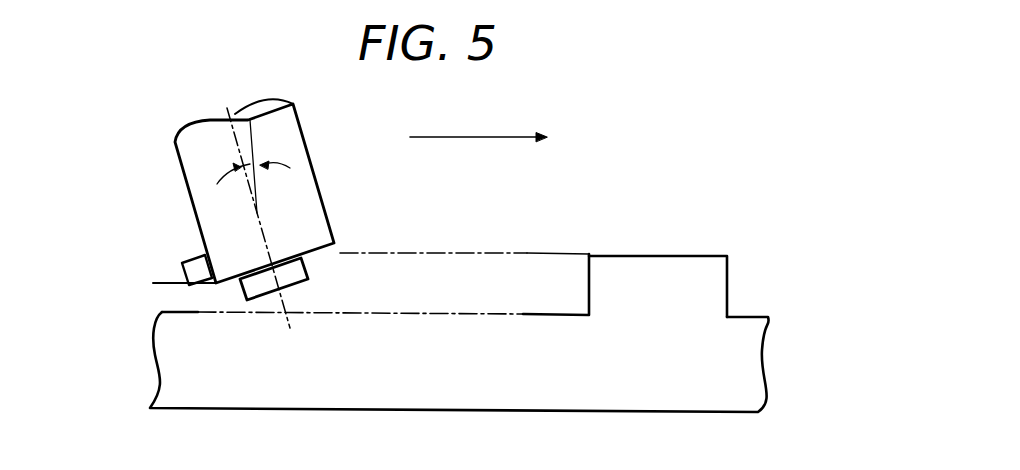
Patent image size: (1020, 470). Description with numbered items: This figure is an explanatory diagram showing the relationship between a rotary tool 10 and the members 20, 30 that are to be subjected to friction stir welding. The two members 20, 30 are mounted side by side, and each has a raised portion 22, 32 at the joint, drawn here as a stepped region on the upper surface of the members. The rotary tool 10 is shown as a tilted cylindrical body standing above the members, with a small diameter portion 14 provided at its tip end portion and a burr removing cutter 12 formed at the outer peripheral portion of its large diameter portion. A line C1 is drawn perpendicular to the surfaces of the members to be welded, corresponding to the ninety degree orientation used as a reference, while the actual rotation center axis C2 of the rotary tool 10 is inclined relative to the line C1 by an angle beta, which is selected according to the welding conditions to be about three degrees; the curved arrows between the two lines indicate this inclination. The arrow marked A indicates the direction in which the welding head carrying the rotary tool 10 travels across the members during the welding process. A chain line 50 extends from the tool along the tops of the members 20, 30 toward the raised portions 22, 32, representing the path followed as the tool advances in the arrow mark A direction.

The rotary tool 10 is at (193, 158).
The burr removing cutter 12 is at (188, 263).
The small diameter portion 14 is at (243, 283).
The member to be subjected to friction stir welding 20 is at (459, 305).
The member to be subjected to friction stir welding 30 is at (543, 317).
The raised portion 22 is at (658, 258).
The raised portion 32 is at (645, 268).
The scanning trajectory line 50 is at (452, 268).
The line perpendicular to the surfaces of the members C1 is at (254, 147).
The rotation center axis C2 is at (228, 118).
The arrow mark A direction A is at (478, 121).